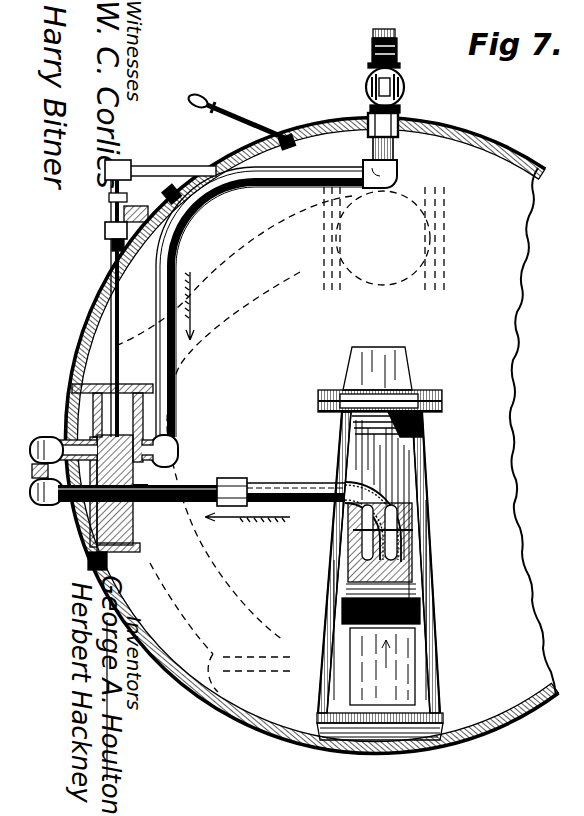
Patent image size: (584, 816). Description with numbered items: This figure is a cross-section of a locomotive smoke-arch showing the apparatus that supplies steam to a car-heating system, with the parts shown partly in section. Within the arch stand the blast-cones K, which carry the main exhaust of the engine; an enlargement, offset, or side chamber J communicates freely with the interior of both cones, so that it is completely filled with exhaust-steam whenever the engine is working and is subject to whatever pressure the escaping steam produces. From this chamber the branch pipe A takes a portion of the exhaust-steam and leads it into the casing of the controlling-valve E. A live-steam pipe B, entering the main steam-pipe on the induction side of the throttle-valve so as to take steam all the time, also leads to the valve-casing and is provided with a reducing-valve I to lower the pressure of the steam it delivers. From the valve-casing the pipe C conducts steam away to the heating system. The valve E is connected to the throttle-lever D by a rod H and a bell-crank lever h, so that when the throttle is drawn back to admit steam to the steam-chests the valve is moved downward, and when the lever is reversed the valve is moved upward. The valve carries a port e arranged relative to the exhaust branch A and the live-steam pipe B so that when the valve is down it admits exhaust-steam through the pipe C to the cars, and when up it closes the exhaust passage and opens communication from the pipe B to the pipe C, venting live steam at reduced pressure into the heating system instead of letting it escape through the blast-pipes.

The branch pipe A is at (229, 513).
The live-steam pipe B is at (274, 313).
The pipe connected to the heating system C is at (32, 462).
The throttle-lever D is at (239, 116).
The controlling-valve E is at (97, 533).
The port e is at (143, 503).
The rod H is at (160, 293).
The bell-crank lever h is at (108, 198).
The reducing-valve I is at (396, 96).
The side chamber J is at (330, 552).
The blast-cones K is at (380, 543).